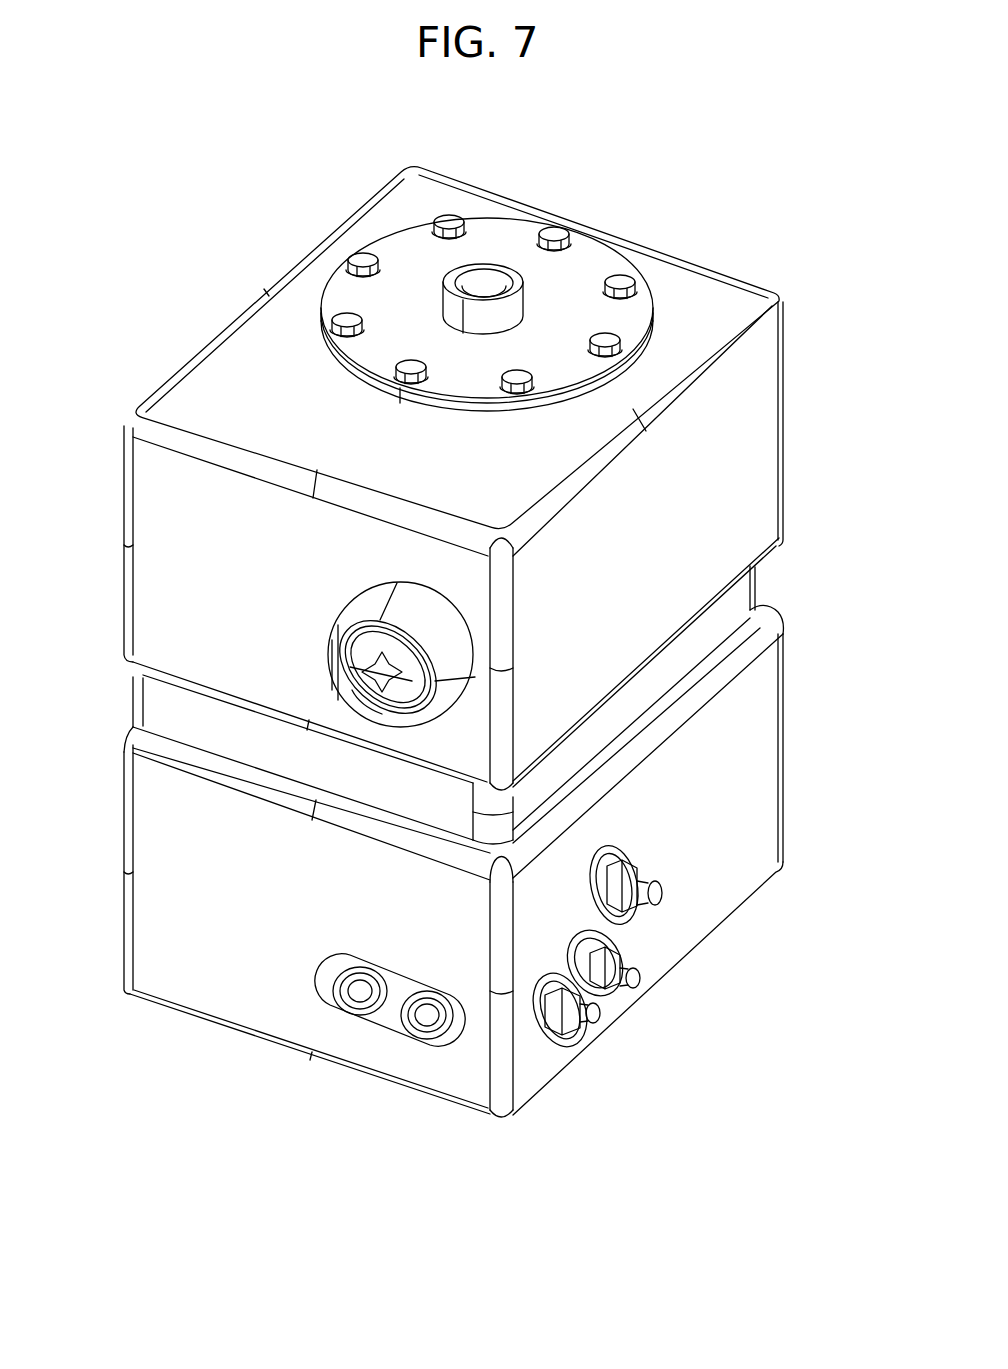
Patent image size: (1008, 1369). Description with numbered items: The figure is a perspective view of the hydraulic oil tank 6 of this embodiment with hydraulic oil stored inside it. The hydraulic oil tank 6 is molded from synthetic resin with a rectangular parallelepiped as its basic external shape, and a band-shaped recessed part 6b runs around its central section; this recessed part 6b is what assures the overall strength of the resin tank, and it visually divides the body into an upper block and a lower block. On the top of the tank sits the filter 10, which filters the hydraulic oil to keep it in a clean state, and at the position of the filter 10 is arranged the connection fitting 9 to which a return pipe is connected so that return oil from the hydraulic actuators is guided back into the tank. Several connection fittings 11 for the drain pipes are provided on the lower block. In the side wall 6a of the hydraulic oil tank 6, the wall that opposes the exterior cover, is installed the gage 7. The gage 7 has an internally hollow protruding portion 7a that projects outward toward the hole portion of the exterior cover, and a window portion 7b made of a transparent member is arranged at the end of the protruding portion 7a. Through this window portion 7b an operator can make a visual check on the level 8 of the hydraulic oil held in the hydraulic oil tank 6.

The hydraulic oil tank 6 is at (786, 378).
The side wall 6a is at (190, 603).
The recessed part 6b is at (310, 762).
The gage 7 is at (460, 653).
The protruding portion 7a is at (453, 700).
The window portion 7b is at (378, 693).
The level 8 is at (352, 650).
The connection fitting 9 is at (492, 264).
The filter 10 is at (587, 280).
The connection fittings 11 is at (667, 898).